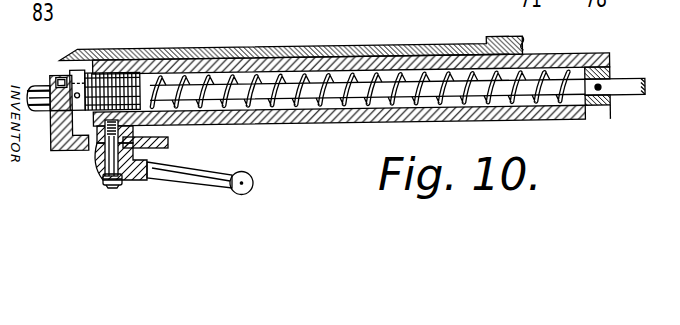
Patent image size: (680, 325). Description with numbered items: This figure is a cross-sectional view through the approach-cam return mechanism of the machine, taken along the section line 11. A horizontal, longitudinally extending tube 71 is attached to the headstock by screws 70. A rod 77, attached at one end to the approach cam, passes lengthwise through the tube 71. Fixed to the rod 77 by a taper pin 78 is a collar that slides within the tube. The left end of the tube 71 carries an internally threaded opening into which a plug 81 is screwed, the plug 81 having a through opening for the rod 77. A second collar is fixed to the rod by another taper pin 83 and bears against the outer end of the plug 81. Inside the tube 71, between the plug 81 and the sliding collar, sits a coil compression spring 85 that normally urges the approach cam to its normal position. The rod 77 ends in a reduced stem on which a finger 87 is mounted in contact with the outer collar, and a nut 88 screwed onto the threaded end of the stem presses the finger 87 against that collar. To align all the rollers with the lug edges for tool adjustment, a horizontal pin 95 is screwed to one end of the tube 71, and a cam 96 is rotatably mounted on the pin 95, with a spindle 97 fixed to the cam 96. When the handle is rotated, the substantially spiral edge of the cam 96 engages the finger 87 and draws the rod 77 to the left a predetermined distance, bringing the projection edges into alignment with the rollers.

The section line / frame 11 is at (53, 150).
The screws 70 is at (456, 6).
The tube 71 is at (580, 118).
The rod 77 is at (632, 92).
The taper pin 78 is at (601, 94).
The plug 81 is at (94, 10).
The taper pin 83 is at (78, 70).
The coil compression spring 85 is at (347, 113).
The finger 87 is at (62, 152).
The nut 88 is at (40, 87).
The horizontal pin 95 is at (112, 150).
The cam 96 is at (168, 144).
The spindle 97 is at (175, 173).